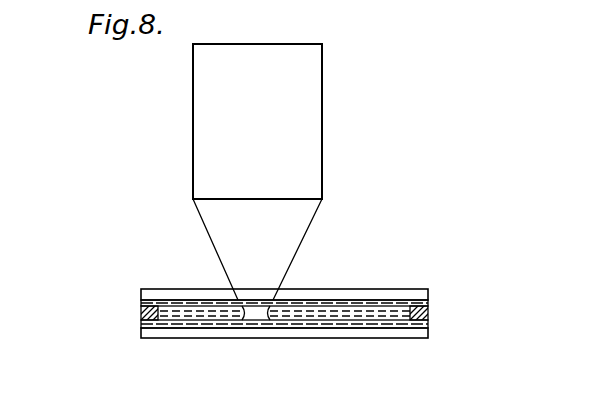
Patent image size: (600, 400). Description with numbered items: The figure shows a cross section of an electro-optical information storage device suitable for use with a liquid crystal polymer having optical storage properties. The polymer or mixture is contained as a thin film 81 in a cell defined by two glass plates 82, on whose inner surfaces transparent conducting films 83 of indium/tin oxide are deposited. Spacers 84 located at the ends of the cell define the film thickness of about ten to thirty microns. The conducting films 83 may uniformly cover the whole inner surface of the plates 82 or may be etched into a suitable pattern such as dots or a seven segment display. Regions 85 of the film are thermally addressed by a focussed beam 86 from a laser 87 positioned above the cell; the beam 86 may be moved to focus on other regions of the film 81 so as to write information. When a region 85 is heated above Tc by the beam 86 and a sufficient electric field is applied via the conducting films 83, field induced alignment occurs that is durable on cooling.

The thin film 81 is at (368, 313).
The glass plates 82 is at (168, 289).
The transparent conducting films 83 is at (430, 301).
The spacers 84 is at (430, 312).
The regions 85 is at (255, 315).
The focussed beam 86 is at (298, 226).
The laser 87 is at (322, 83).